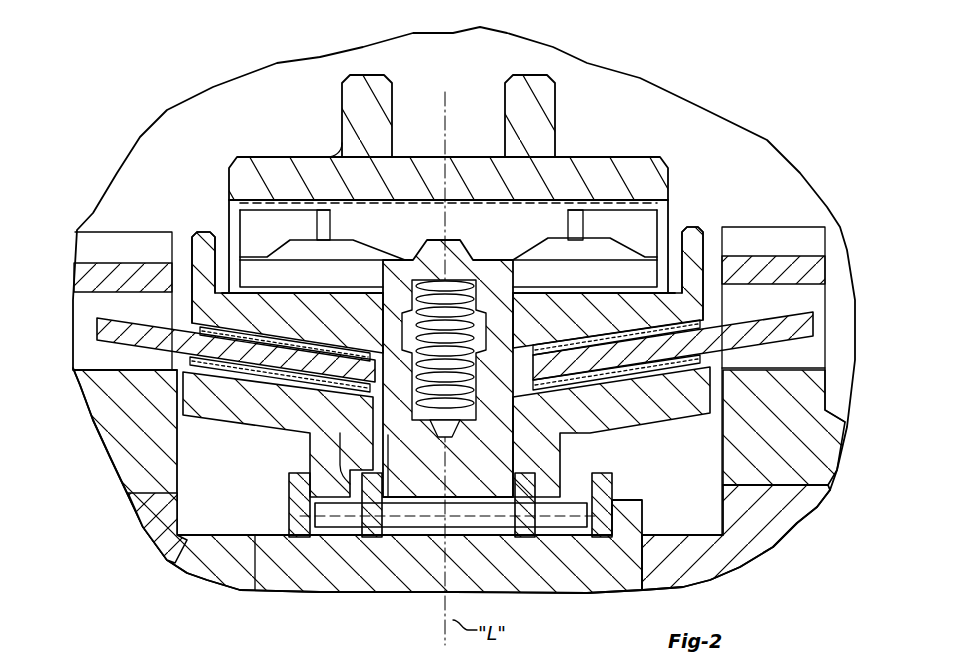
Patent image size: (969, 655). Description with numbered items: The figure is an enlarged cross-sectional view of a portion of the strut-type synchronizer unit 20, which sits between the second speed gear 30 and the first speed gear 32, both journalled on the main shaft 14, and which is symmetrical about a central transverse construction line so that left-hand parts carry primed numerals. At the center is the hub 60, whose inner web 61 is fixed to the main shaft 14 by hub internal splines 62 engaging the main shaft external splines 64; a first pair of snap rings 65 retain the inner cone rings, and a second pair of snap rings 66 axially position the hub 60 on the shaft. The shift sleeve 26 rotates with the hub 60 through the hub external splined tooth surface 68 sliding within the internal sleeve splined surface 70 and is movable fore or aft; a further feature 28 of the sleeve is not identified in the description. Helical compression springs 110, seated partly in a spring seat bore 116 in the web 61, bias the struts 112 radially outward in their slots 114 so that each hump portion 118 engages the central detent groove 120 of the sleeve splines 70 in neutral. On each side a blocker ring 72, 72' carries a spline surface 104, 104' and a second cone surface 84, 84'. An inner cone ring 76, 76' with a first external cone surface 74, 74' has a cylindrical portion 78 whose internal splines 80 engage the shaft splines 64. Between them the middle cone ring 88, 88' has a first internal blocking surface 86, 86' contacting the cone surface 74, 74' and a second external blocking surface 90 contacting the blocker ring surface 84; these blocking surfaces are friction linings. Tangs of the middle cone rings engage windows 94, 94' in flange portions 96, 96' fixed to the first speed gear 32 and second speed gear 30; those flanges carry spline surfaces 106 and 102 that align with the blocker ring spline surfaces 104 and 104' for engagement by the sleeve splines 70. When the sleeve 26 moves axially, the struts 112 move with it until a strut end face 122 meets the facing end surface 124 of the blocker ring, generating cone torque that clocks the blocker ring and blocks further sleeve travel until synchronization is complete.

The main shaft 14 is at (385, 573).
The synchronizer unit 20 is at (311, 126).
The shift sleeve 26 is at (448, 184).
The cap lugs 28 is at (392, 93).
The second speed gear 30 is at (218, 550).
The first speed gear 32 is at (753, 528).
The hub 60 is at (493, 478).
The inner web 61 is at (518, 445).
The hub internal splines 62 is at (389, 456).
The main shaft external splines 64 is at (400, 528).
The first pair of snap rings 65 is at (298, 545).
The second snap rings 66 is at (358, 548).
The hub external splined tooth surface 68 is at (605, 253).
The internal sleeve splined surface 70 is at (288, 250).
The blocker ring 72 is at (719, 299).
The blocker ring 72' is at (168, 305).
The first external cone surface 74 is at (611, 432).
The first external cone surface 74' is at (278, 434).
The inner cone ring 76 is at (707, 441).
The inner cone ring 76' is at (201, 441).
The cylindrical portion 78 is at (577, 453).
The internal splines 80 is at (612, 490).
The second cone surface 84 is at (608, 287).
The second cone surface 84' is at (287, 292).
The first internal conical blocking surface 86 is at (753, 348).
The first internal conical blocking surface 86' is at (155, 391).
The middle cone ring 88 is at (711, 346).
The middle cone ring 88' is at (201, 350).
The second external conical blocking surface 90 is at (322, 345).
The window 94 is at (858, 306).
The window 94' is at (57, 386).
The flange portion 96 is at (837, 454).
The flange portion 96' is at (83, 454).
The spline surface 102 is at (113, 238).
The spline surface 104 is at (729, 257).
The spline surface 104' is at (147, 221).
The spline surface 106 is at (808, 238).
The helical compression springs 110 is at (450, 368).
The struts 112 is at (511, 268).
The slots 114 is at (512, 297).
The spring seat bore 116 is at (483, 403).
The hump portion 118 is at (455, 250).
The central detent groove 120 is at (427, 250).
The end face 122 is at (380, 281).
The end surface 124 is at (375, 329).